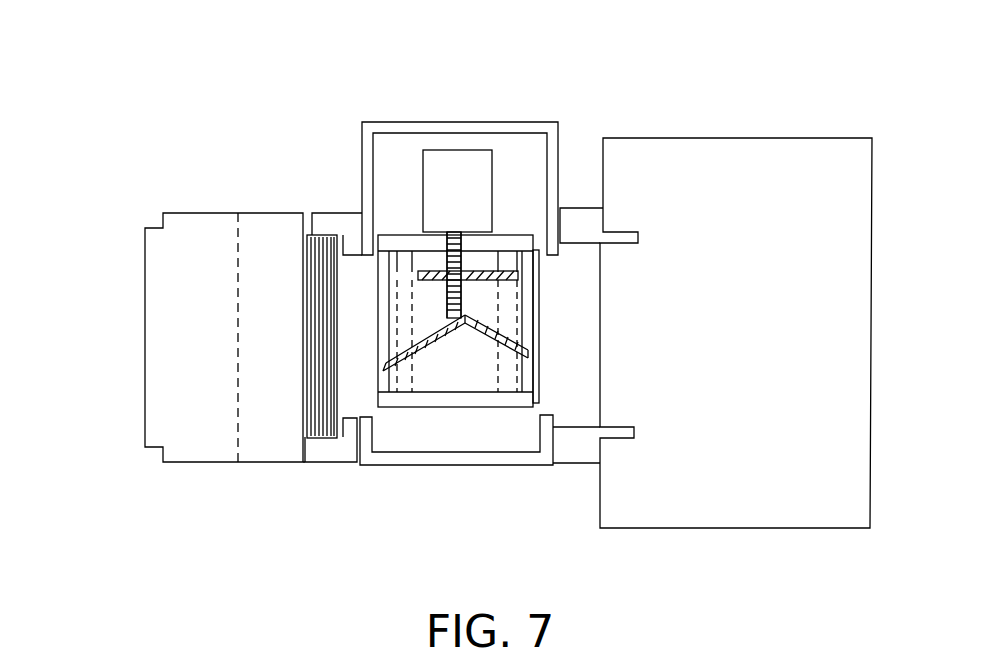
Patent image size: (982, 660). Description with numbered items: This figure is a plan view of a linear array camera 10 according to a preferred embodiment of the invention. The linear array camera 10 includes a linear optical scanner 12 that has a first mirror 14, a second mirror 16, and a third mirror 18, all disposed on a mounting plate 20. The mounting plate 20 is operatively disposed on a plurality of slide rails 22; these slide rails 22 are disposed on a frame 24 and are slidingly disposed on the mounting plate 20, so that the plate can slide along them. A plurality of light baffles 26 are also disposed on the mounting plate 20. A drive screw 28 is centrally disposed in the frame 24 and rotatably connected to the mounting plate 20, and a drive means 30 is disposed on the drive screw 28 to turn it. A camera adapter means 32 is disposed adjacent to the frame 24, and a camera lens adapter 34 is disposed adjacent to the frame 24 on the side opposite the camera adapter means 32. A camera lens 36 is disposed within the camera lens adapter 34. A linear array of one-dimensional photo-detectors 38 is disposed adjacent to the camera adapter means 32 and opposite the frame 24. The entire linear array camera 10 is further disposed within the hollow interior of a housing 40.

The linear array camera 10 is at (123, 71).
The linear optical scanner 12 is at (485, 347).
The first mirror 14 is at (450, 347).
The second mirror 16 is at (430, 267).
The third mirror 18 is at (490, 348).
The mounting plate 20 is at (452, 352).
The slide rails 22 is at (390, 233).
The frame 24 is at (421, 272).
The light baffles 26 is at (540, 273).
The drive screw 28 is at (463, 237).
The drive means 30 is at (463, 150).
The camera adapter means 32 is at (587, 222).
The camera lens adapter 34 is at (323, 227).
The camera lens 36 is at (203, 238).
The linear array of one-dimensional photo-detectors 38 is at (680, 320).
The housing 40 is at (484, 452).